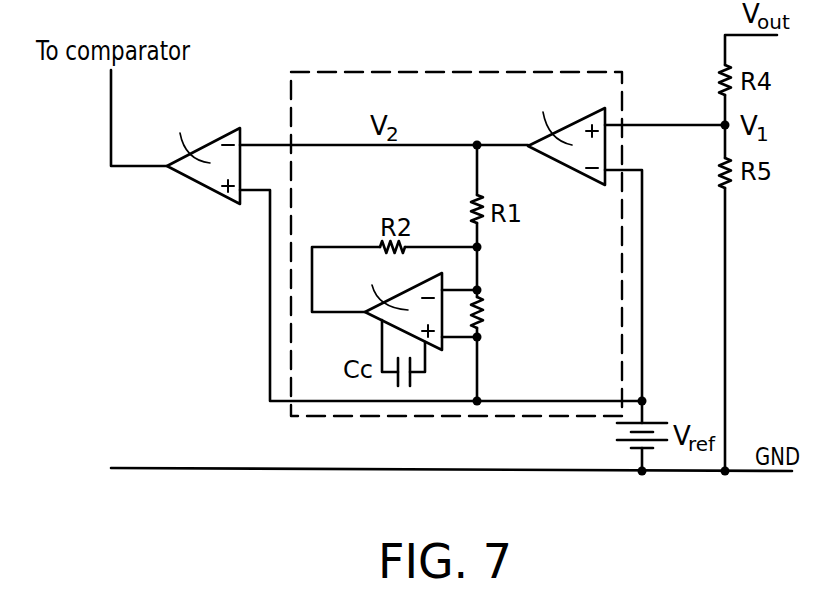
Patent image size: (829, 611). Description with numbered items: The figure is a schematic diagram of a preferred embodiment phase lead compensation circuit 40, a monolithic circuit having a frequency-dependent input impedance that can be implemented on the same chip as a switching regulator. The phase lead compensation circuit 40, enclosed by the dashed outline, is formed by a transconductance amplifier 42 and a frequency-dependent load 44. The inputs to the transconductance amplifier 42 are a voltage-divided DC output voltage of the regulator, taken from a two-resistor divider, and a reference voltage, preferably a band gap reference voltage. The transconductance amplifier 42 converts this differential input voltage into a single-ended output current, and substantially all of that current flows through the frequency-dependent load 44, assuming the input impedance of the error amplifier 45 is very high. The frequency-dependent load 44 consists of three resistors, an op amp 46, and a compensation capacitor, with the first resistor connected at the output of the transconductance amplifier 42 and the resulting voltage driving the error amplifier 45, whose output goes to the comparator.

The phase lead compensation circuit 40 is at (503, 72).
The transconductance amplifier 42 is at (568, 158).
The frequency-dependent load 44 is at (522, 303).
The error amplifier 45 is at (205, 180).
The op amp 46 is at (392, 315).